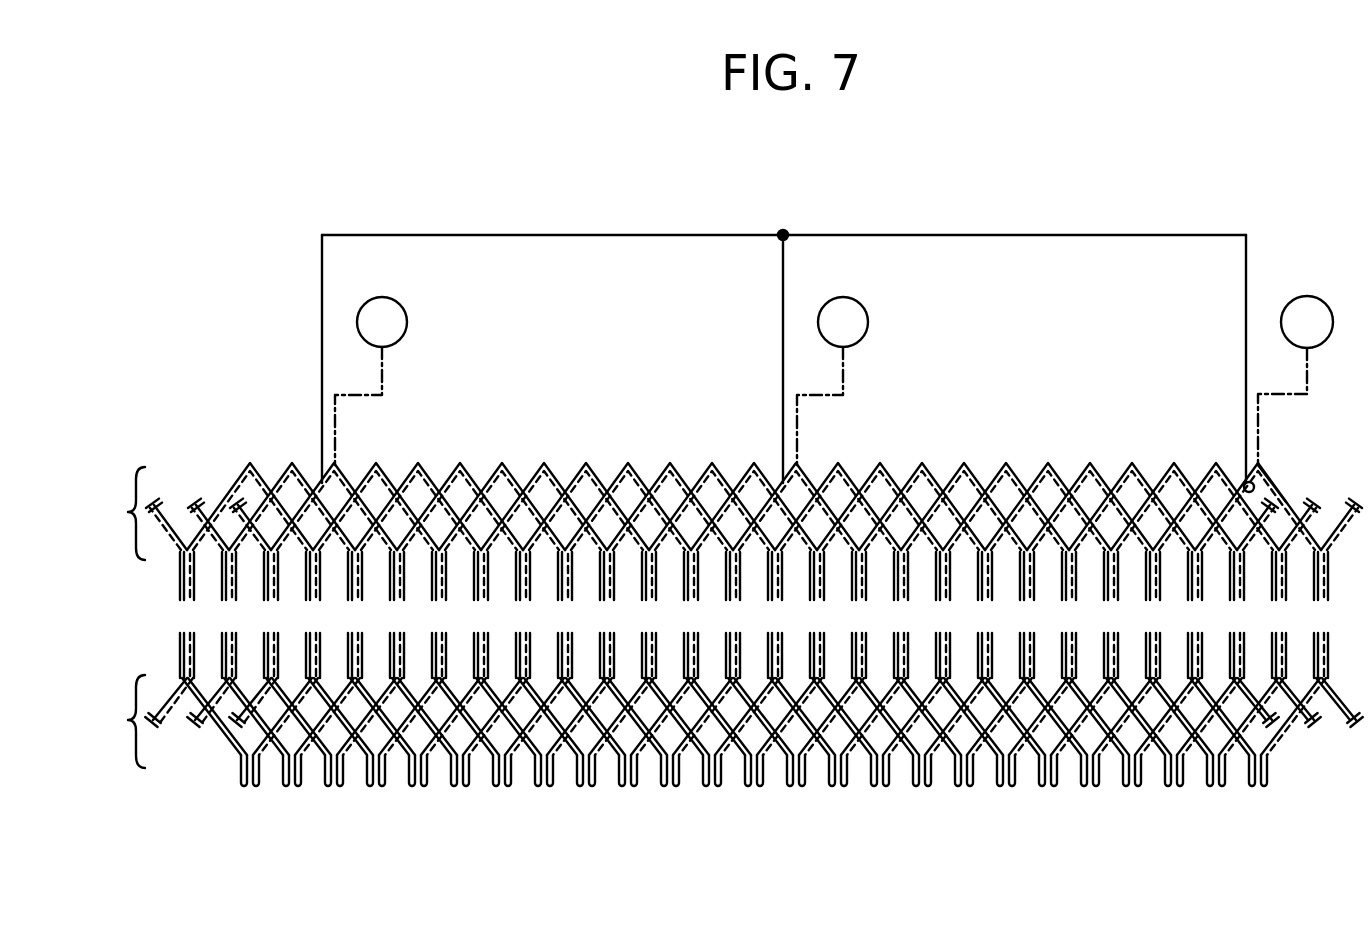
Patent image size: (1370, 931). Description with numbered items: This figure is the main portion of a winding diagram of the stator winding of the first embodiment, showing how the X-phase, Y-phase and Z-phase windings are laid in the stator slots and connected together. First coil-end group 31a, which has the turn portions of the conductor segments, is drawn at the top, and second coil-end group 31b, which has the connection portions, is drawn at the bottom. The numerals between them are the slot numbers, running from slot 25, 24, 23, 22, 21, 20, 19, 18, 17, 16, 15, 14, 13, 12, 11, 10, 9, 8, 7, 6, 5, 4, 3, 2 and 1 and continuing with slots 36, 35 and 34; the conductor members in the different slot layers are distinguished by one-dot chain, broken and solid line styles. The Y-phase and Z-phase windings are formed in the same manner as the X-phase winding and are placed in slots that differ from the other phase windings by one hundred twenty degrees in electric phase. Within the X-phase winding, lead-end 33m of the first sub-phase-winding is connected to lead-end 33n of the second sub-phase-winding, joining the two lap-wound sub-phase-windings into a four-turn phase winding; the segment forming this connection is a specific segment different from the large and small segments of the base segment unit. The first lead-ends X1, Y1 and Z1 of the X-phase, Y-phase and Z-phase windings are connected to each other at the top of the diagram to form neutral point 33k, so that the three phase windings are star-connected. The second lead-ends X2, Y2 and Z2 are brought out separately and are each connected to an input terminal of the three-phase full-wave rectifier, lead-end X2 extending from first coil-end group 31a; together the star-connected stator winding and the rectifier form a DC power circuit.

The slot number 1 is at (1195, 615).
The slot number 2 is at (1153, 615).
The slot number 3 is at (1111, 615).
The slot number 4 is at (1069, 615).
The slot number 5 is at (1027, 615).
The slot number 6 is at (985, 615).
The slot number 7 is at (943, 615).
The slot number 8 is at (901, 615).
The slot number 9 is at (859, 615).
The slot number 10 is at (817, 615).
The slot number 11 is at (775, 615).
The slot number 12 is at (733, 615).
The slot number 13 is at (691, 615).
The slot number 14 is at (649, 615).
The slot number 15 is at (607, 615).
The slot number 16 is at (565, 615).
The slot number 17 is at (523, 615).
The slot number 18 is at (481, 615).
The slot number 19 is at (439, 615).
The slot number 20 is at (397, 615).
The slot number 21 is at (355, 615).
The slot number 22 is at (313, 615).
The slot number 23 is at (271, 615).
The slot number 24 is at (229, 615).
The slot number 25 is at (187, 615).
The slot number 34 is at (1321, 615).
The slot number 35 is at (1279, 615).
The slot number 36 is at (1237, 615).
The first coil-end group 31a is at (111, 513).
The second coil-end group 31b is at (111, 721).
The neutral point 33k is at (788, 231).
The lead-end of first sub-phase-winding 33m is at (1285, 488).
The lead-end of second sub-phase-winding 33n is at (1242, 480).
The first lead-end of Z-phase winding Z1 is at (466, 234).
The second lead-end of Z-phase winding Z2 is at (371, 381).
The first lead-end of Y-phase winding Y1 is at (786, 268).
The second lead-end of Y-phase winding Y2 is at (832, 381).
The first lead-end of X-phase winding X1 is at (1075, 234).
The second lead-end of X-phase winding X2 is at (1295, 380).